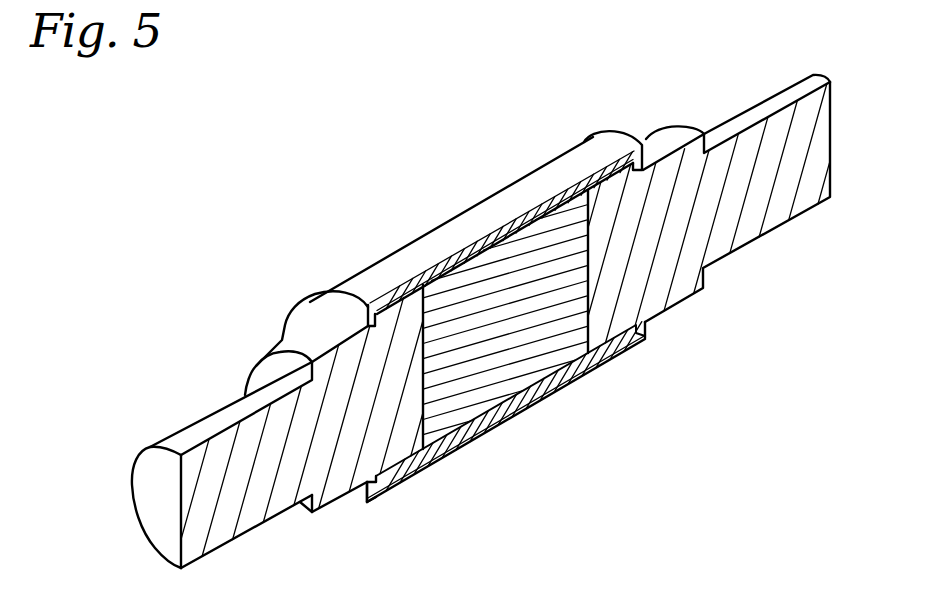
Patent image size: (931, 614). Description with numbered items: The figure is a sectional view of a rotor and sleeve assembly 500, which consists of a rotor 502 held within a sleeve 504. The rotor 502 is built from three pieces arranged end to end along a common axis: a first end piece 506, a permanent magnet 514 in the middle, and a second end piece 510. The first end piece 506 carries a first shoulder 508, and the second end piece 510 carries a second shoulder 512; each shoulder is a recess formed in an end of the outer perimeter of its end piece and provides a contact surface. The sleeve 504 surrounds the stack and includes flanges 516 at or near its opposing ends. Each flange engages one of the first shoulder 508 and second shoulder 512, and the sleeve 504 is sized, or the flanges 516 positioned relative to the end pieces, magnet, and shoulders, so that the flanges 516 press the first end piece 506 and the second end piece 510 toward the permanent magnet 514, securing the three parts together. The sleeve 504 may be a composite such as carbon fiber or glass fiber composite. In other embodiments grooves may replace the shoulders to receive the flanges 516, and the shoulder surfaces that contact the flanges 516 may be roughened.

The rotor and sleeve assembly 500 is at (301, 188).
The rotor 502 is at (203, 390).
The sleeve 504 is at (535, 198).
The first end piece 506 is at (262, 498).
The first shoulder 508 is at (368, 503).
The second end piece 510 is at (780, 200).
The second shoulder 512 is at (648, 327).
The permanent magnet 514 is at (520, 355).
The flanges 516 is at (363, 328).